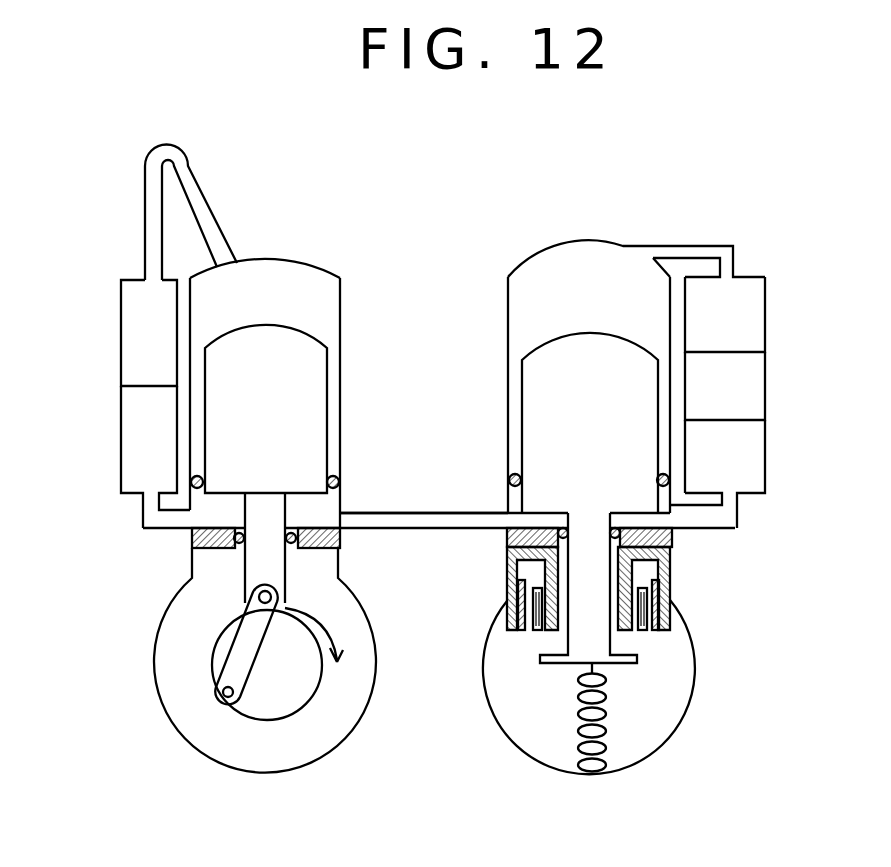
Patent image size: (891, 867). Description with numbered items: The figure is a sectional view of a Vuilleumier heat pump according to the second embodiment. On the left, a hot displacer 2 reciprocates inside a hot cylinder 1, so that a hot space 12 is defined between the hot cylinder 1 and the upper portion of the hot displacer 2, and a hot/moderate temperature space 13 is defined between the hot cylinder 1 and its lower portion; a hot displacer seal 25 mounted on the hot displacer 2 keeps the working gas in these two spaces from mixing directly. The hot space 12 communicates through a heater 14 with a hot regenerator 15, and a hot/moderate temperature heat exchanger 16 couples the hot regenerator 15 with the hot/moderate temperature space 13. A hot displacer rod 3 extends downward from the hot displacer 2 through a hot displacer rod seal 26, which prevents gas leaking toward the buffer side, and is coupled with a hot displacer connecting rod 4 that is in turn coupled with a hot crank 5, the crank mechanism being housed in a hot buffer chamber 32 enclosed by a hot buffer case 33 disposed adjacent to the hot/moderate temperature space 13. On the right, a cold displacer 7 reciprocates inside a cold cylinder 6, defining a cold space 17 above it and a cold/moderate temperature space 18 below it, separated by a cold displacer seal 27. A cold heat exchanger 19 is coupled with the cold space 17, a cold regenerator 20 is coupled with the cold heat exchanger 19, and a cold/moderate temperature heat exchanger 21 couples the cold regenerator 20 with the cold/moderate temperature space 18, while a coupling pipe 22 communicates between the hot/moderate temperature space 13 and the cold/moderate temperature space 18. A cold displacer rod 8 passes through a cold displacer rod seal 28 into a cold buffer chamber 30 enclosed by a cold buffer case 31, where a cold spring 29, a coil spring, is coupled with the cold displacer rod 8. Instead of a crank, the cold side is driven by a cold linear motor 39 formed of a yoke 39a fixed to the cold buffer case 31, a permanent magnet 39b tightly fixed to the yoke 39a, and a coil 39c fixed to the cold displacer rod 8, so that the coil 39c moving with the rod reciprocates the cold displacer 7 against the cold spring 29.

The hot cylinder 1 is at (342, 312).
The hot displacer 2 is at (308, 390).
The hot displacer rod 3 is at (267, 523).
The hot displacer connecting rod 4 is at (245, 643).
The hot crank 5 is at (210, 668).
The cold cylinder 6 is at (508, 298).
The cold displacer 7 is at (545, 383).
The cold displacer rod 8 is at (593, 538).
The hot space 12 is at (308, 283).
The hot/moderate temperature space 13 is at (325, 512).
The heater 14 is at (147, 215).
The hot regenerator 15 is at (135, 335).
The hot/moderate temperature heat exchanger 16 is at (135, 452).
The cold space 17 is at (553, 270).
The cold/moderate temperature space 18 is at (518, 517).
The cold heat exchanger 19 is at (747, 325).
The cold regenerator 20 is at (750, 393).
The cold/moderate temperature heat exchanger 21 is at (742, 467).
The coupling pipe 22 is at (390, 528).
The hot displacer seal 25 is at (340, 475).
The hot displacer rod seal 26 is at (233, 540).
The cold displacer seal 27 is at (685, 480).
The cold displacer rod seal 28 is at (507, 545).
The cold spring 29 is at (608, 733).
The cold buffer chamber 30 is at (513, 707).
The cold buffer case 31 is at (557, 772).
The hot buffer chamber 32 is at (222, 738).
The hot buffer case 33 is at (305, 768).
The cold linear motor 39 is at (669, 652).
The yoke 39a is at (670, 578).
The permanent magnet 39b is at (652, 606).
The coil 39c is at (642, 613).